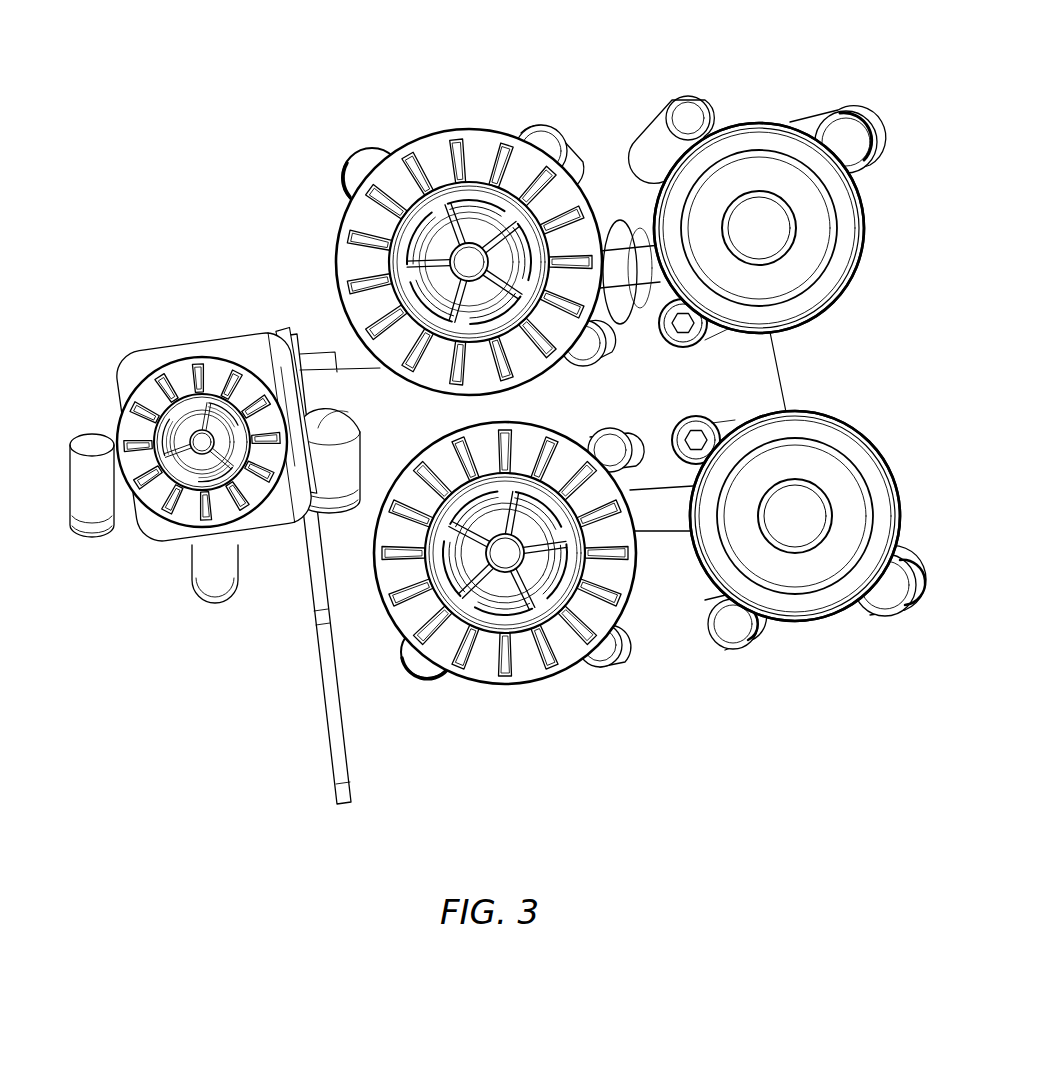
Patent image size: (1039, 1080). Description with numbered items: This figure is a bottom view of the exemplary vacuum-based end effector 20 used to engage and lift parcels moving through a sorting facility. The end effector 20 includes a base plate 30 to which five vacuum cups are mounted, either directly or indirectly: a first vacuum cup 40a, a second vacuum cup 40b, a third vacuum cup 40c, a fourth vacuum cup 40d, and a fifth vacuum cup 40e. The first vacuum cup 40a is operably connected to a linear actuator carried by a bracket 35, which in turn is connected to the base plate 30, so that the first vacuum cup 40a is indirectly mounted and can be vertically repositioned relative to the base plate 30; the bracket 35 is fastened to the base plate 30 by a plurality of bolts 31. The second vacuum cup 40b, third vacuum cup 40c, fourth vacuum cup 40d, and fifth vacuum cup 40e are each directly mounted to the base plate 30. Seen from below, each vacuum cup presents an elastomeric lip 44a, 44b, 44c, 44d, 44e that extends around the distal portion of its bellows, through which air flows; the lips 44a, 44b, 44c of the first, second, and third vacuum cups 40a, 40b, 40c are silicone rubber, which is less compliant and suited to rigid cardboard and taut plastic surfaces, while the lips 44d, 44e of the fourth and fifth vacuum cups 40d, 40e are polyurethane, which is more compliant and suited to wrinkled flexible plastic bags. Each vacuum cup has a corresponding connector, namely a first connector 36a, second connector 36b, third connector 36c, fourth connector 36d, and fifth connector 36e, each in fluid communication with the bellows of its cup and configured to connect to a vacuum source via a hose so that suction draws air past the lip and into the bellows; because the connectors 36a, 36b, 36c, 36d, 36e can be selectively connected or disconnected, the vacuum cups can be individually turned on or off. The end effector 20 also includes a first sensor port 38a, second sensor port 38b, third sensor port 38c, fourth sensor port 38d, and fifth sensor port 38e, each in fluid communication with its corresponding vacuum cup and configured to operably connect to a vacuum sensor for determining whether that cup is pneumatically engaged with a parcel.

The end effector 20 is at (186, 120).
The base plate 30 is at (656, 252).
The bolts 31 is at (646, 262).
The bracket 35 is at (764, 380).
The first connector 36a is at (330, 492).
The second connector 36b is at (442, 682).
The third connector 36c is at (362, 176).
The fourth connector 36d is at (908, 600).
The fifth connector 36e is at (850, 130).
The first sensor port 38a is at (86, 500).
The second sensor port 38b is at (606, 661).
The third sensor port 38c is at (533, 130).
The fourth sensor port 38d is at (736, 646).
The fifth sensor port 38e is at (684, 98).
The first vacuum cup 40a is at (200, 362).
The second vacuum cup 40b is at (546, 690).
The third vacuum cup 40c is at (336, 244).
The fourth vacuum cup 40d is at (793, 622).
The fifth vacuum cup 40e is at (762, 134).
The lip 44a is at (146, 390).
The lip 44b is at (410, 606).
The lip 44c is at (430, 152).
The lip 44d is at (850, 448).
The lip 44e is at (790, 122).